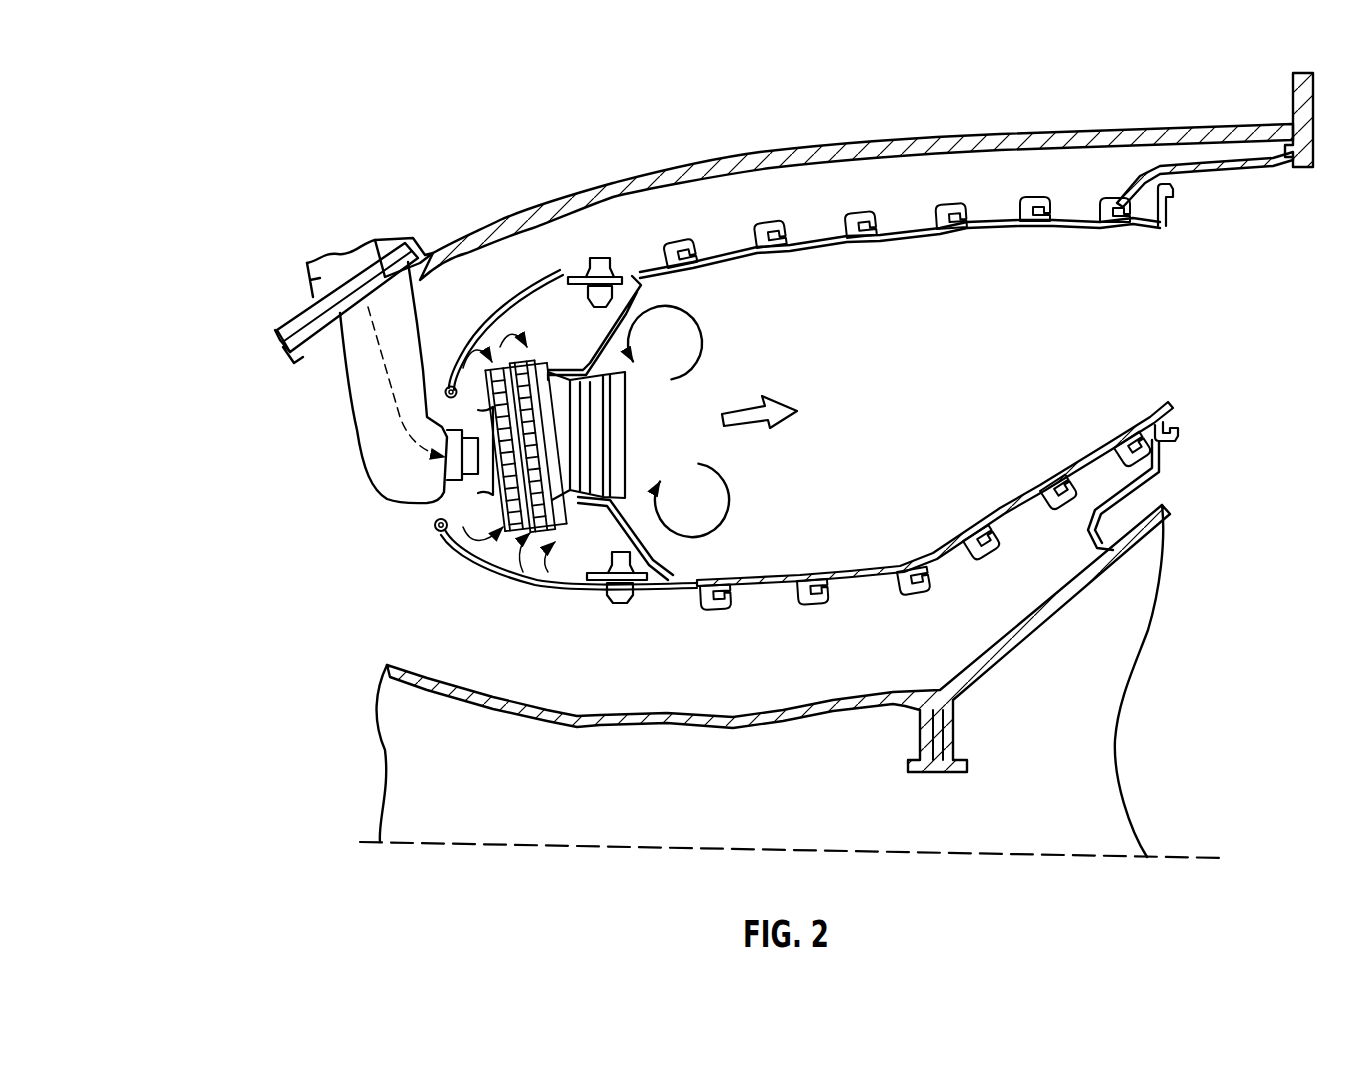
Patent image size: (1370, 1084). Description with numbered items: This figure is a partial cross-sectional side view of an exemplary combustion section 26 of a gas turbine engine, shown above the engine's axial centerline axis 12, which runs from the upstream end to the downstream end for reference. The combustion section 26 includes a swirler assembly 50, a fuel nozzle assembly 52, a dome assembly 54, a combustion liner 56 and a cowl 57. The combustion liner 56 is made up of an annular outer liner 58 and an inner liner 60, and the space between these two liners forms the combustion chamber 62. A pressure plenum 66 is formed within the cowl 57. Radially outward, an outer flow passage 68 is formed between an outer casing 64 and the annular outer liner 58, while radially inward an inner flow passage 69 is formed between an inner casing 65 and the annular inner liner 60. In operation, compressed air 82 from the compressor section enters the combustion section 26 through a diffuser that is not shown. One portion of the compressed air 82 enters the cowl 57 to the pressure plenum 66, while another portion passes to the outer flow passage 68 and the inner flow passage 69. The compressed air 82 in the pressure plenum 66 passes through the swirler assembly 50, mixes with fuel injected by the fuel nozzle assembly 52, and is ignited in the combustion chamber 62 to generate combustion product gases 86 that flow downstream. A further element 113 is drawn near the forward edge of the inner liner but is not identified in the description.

The axial centerline axis 12 is at (932, 845).
The combustion section 26 is at (1063, 86).
The swirler assembly 50 is at (518, 558).
The fuel nozzle assembly 52 is at (356, 434).
The dome assembly 54 is at (640, 305).
The combustion liner 56 is at (718, 252).
The cowl 57 is at (500, 316).
The annular outer liner 58 is at (750, 264).
The inner liner 60 is at (880, 560).
The combustion chamber 62 is at (838, 387).
The outer casing 64 is at (852, 138).
The inner casing 65 is at (625, 712).
The pressure plenum 66 is at (543, 315).
The outer flow passage 68 is at (976, 202).
The inner flow passage 69 is at (753, 668).
The compressed air 82 is at (265, 506).
The combustion product gases 86 is at (770, 420).
The liner lip 113 is at (443, 533).